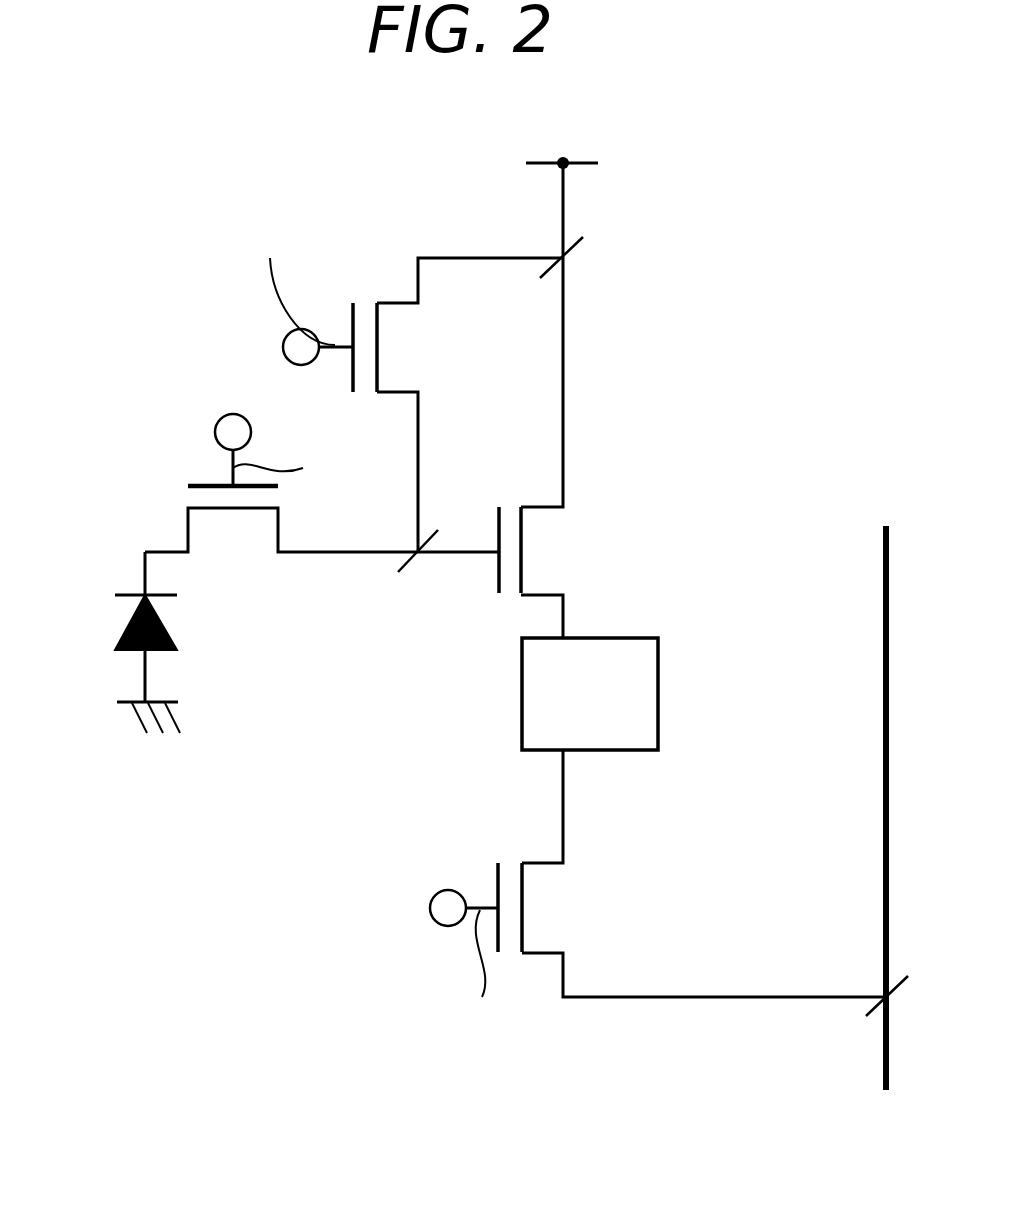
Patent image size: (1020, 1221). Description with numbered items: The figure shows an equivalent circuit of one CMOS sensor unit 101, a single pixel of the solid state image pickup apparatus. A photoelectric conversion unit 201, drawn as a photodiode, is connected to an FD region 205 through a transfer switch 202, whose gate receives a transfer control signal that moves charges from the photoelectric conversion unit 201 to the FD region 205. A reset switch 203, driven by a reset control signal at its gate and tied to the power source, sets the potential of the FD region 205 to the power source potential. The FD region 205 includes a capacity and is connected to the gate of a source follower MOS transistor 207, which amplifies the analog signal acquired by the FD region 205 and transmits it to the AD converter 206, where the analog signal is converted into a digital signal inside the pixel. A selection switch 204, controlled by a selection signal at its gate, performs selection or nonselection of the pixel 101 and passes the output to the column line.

The CMOS sensor unit 101 is at (132, 627).
The photoelectric conversion unit 201 is at (732, 298).
The transfer switch 202 is at (161, 498).
The reset switch 203 is at (365, 280).
The selection switch 204 is at (479, 872).
The FD region 205 is at (413, 578).
The AD converter 206 is at (658, 689).
The source follower MOS transistor 207 is at (604, 546).